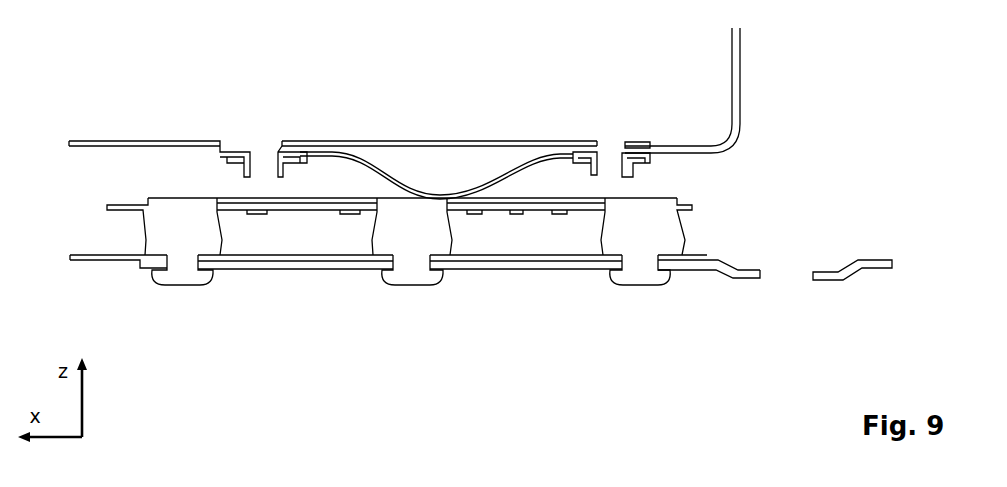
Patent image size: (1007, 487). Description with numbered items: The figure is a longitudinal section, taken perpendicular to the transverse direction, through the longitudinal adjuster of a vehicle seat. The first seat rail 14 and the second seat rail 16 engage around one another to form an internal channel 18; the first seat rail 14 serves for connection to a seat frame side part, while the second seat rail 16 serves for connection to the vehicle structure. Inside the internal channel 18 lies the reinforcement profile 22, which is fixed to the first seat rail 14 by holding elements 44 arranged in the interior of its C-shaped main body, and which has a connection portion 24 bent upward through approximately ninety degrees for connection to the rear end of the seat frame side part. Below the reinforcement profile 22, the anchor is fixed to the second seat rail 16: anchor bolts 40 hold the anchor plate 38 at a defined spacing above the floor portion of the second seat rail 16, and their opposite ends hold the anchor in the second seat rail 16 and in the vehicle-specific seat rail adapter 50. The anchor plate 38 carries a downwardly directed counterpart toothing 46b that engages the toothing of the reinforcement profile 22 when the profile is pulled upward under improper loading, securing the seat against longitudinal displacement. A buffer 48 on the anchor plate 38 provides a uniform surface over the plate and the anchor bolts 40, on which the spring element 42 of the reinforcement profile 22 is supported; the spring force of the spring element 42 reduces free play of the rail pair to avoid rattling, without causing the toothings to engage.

The first seat rail 14 is at (400, 143).
The spring element 42 is at (502, 157).
The holding element 44 is at (593, 157).
The reinforcement profile 22 is at (678, 150).
The connection portion 24 is at (738, 72).
The internal channel 18 is at (696, 178).
The anchor bolt 40 is at (180, 255).
The anchor plate 38 is at (248, 208).
The buffer 48 is at (306, 208).
The counterpart toothing 46b is at (557, 213).
The second seat rail 16 is at (498, 255).
The seat rail adapter 50 is at (727, 273).